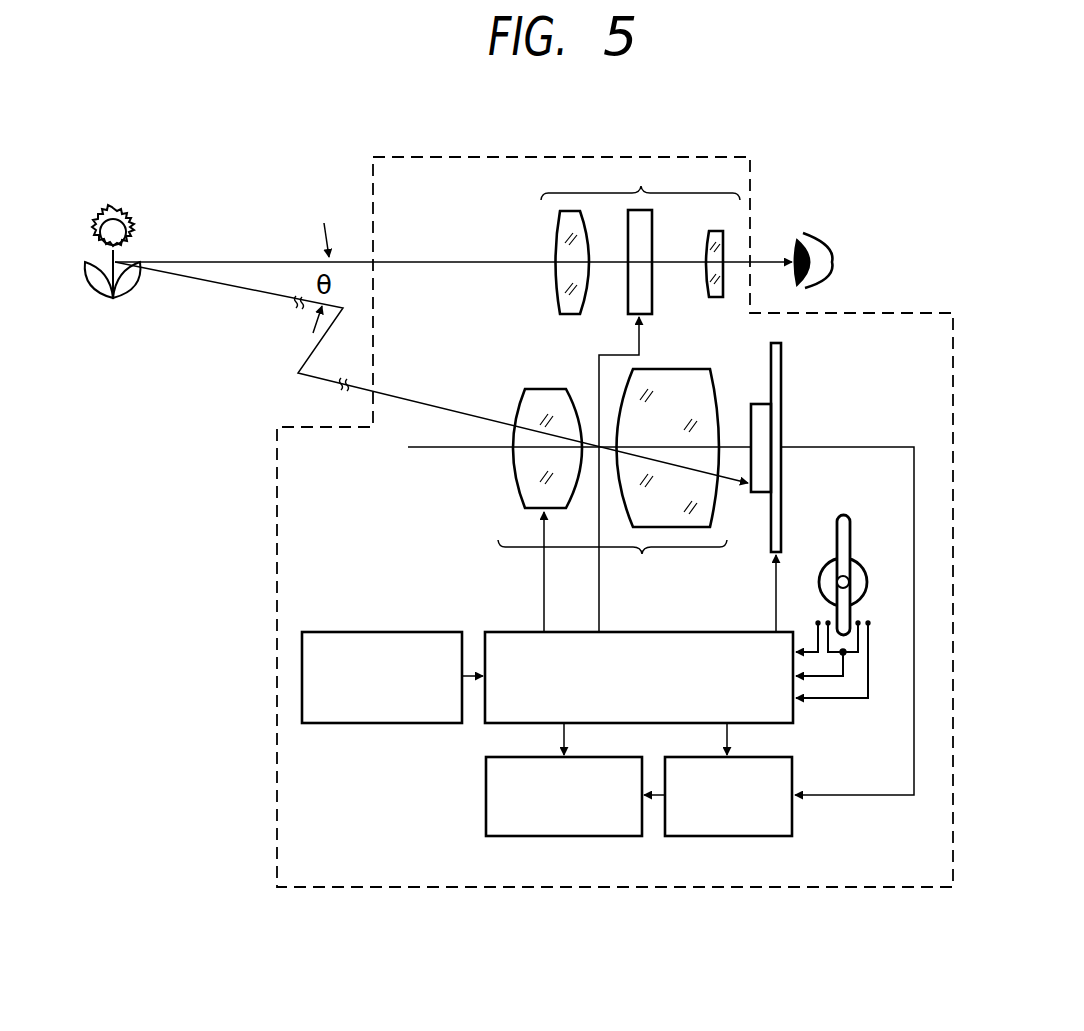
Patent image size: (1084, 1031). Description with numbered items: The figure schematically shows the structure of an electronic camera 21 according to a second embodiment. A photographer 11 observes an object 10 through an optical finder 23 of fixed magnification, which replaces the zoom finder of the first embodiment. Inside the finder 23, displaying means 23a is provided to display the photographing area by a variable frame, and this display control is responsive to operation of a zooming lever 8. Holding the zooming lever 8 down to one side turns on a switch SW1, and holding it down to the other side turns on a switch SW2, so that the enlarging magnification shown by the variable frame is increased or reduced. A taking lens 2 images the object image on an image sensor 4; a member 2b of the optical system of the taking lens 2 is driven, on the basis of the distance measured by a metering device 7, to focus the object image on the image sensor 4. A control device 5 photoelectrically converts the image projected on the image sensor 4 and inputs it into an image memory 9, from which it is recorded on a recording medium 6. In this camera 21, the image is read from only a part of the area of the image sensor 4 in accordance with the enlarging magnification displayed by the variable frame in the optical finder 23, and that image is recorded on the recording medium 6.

The taking lens 2 is at (591, 477).
The member of the optical system of the taking lens 2b is at (520, 492).
The image sensor 4 is at (782, 367).
The control device 5 is at (514, 631).
The recording medium 6 is at (597, 837).
The metering device 7 is at (333, 631).
The zooming lever 8 is at (845, 514).
The image memory 9 is at (757, 837).
The object 10 is at (134, 207).
The photographer 11 is at (828, 241).
The electronic camera 21 is at (431, 153).
The optical finder 23 is at (660, 189).
The displaying means 23a is at (652, 300).
The switch SW1 is at (869, 614).
The switch SW2 is at (820, 614).